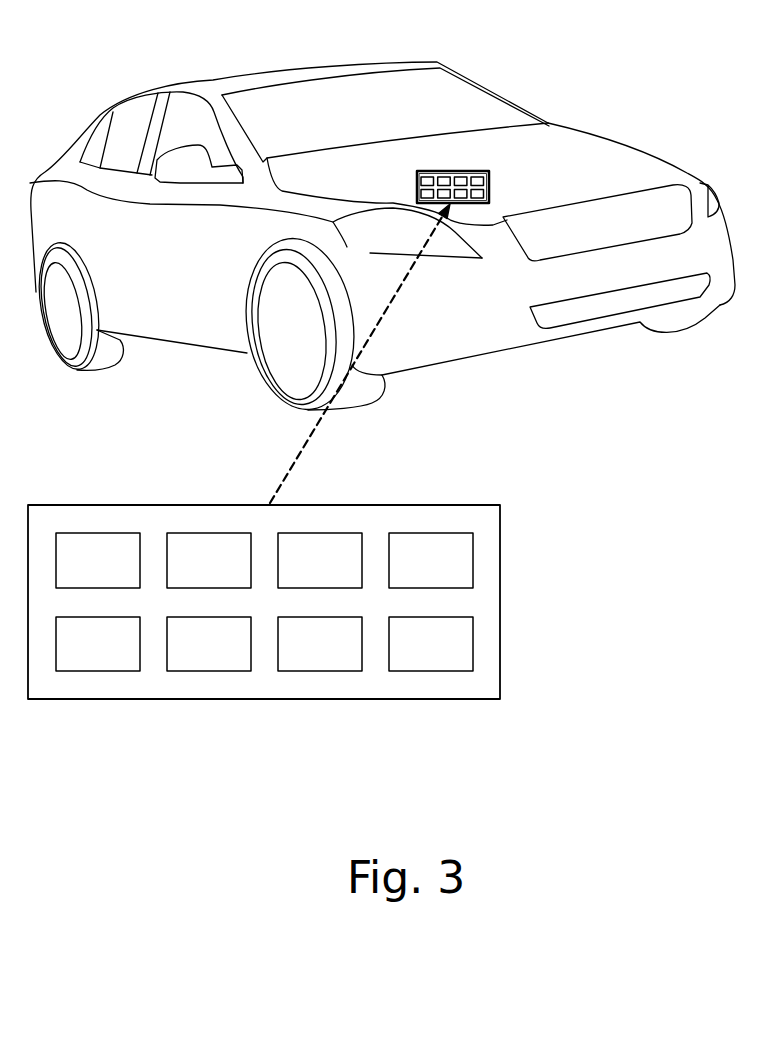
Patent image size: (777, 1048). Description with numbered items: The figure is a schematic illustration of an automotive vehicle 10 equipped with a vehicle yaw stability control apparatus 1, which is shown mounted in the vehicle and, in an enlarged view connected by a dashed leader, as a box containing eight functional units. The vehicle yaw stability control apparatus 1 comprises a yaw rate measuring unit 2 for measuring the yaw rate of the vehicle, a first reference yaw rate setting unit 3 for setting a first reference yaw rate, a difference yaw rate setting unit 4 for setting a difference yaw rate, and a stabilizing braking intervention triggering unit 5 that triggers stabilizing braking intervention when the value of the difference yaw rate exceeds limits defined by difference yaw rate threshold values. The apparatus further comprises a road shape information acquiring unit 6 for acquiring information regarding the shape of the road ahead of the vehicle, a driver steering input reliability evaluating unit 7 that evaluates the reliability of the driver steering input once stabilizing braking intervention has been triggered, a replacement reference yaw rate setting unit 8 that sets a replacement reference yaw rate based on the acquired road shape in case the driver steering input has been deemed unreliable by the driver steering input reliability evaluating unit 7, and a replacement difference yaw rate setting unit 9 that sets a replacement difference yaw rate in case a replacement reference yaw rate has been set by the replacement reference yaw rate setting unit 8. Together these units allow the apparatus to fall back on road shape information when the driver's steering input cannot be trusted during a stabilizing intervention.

The automotive vehicle 10 is at (390, 55).
The vehicle yaw stability control apparatus 1 is at (335, 500).
The yaw rate measuring unit 2 is at (91, 578).
The first reference yaw rate setting unit 3 is at (202, 578).
The difference yaw rate setting unit 4 is at (313, 578).
The stabilizing braking intervention triggering unit 5 is at (424, 578).
The road shape information acquiring unit 6 is at (91, 662).
The driver steering input reliability evaluating unit 7 is at (202, 662).
The replacement reference yaw rate setting unit 8 is at (313, 662).
The replacement difference yaw rate setting unit 9 is at (424, 662).